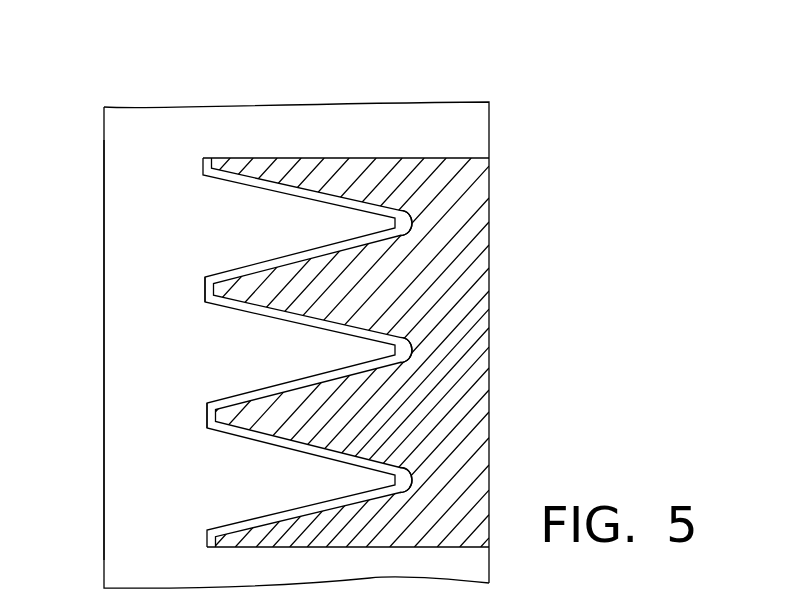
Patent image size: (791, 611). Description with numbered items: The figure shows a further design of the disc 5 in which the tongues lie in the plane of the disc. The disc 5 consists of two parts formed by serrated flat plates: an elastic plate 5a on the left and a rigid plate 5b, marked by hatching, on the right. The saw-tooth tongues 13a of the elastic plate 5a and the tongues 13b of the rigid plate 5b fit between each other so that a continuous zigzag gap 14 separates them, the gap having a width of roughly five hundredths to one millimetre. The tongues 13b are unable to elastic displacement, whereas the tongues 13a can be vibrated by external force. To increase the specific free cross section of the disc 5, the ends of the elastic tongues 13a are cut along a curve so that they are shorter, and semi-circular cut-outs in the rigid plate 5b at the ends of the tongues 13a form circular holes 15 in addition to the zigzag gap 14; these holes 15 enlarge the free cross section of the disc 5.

The disc 5 is at (541, 112).
The elastic plate 5a is at (228, 222).
The rigid plate 5b is at (423, 283).
The elastic tongues 13a is at (348, 352).
The rigid tongues 13b is at (280, 407).
The zigzag gap 14 is at (292, 515).
The circular holes 15 is at (405, 225).